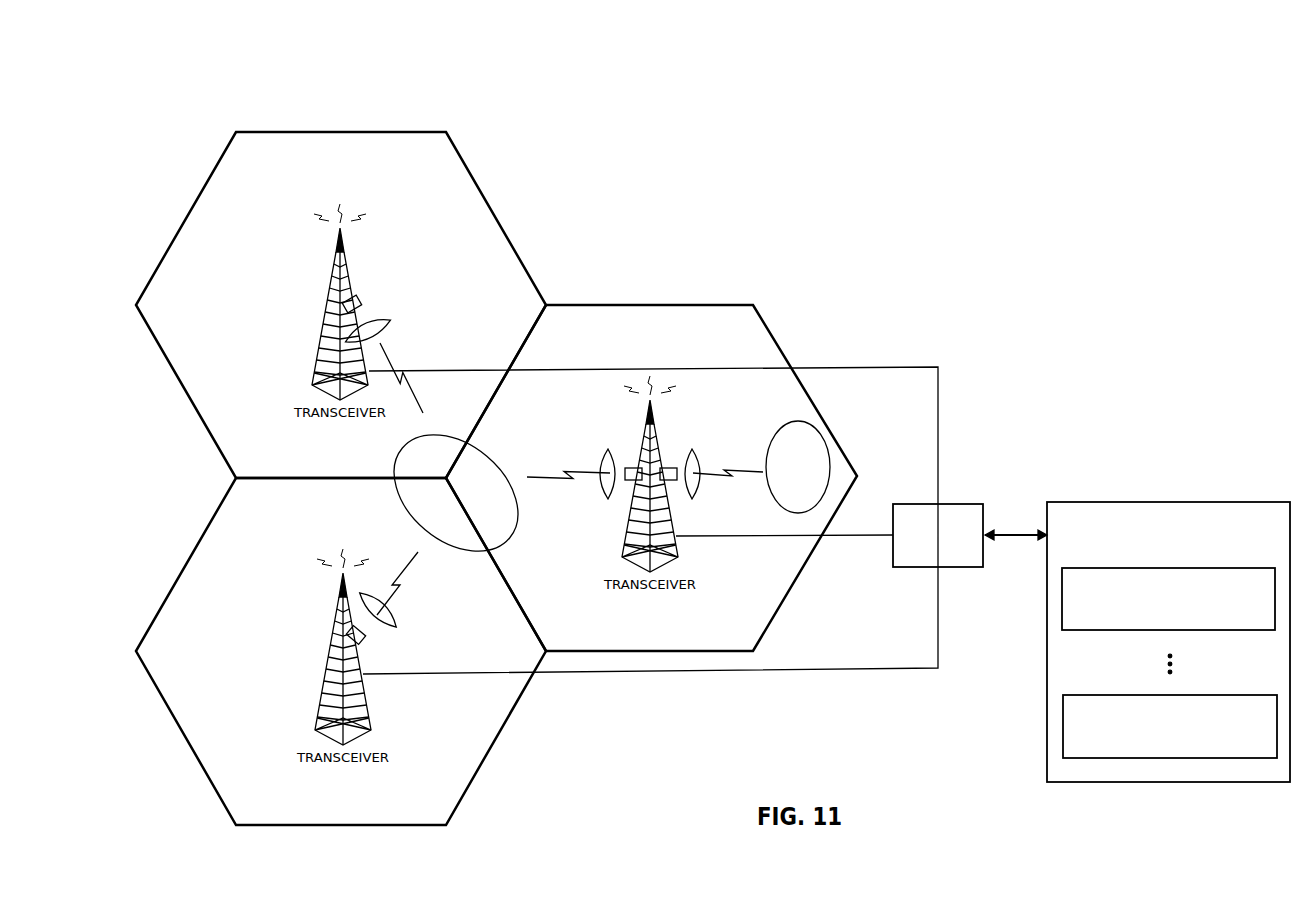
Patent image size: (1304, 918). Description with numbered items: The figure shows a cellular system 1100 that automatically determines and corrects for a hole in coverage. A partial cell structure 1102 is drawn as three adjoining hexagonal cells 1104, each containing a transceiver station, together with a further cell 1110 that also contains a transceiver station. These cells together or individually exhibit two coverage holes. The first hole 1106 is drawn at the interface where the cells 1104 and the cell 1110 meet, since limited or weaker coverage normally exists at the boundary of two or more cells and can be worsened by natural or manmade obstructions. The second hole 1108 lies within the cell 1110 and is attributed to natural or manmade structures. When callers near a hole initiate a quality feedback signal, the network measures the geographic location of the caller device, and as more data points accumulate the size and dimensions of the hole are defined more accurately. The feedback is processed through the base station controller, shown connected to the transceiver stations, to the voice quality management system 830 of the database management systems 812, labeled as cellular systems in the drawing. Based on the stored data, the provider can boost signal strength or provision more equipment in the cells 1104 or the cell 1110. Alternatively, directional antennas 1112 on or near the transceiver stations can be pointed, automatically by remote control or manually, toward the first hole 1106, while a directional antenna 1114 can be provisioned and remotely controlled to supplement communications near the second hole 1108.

The cellular communication system 1100 is at (1068, 84).
The partial cell structure 1102 is at (650, 136).
The cells 1104 is at (432, 131).
The first hole 1106 is at (493, 458).
The second hole 1108 is at (798, 421).
The cell 1110 is at (740, 304).
The directional antennas 1112 is at (378, 306).
The directional antenna 1114 is at (700, 500).
The database management systems 812 is at (1168, 628).
The voice quality management system 830 is at (1216, 696).